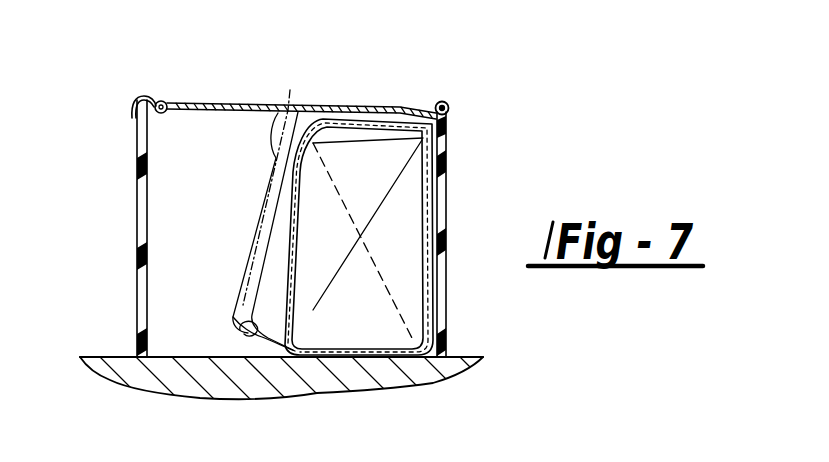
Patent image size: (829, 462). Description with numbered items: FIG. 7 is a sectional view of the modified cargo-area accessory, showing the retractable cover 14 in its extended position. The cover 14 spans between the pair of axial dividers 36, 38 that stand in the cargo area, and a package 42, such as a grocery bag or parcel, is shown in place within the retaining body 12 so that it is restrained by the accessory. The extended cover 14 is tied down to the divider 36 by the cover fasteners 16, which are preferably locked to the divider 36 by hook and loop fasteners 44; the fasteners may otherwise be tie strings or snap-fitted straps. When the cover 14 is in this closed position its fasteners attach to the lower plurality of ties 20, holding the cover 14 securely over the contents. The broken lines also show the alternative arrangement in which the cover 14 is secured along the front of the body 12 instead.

The retaining body 12 is at (293, 208).
The retractable cover 14 is at (218, 103).
The cover fasteners 16 is at (134, 118).
The lower plurality of ties 20 is at (252, 337).
The axial divider 36 is at (135, 270).
The axial divider 38 is at (440, 193).
The package 42 is at (408, 273).
The hook and loop fasteners 44 is at (134, 125).